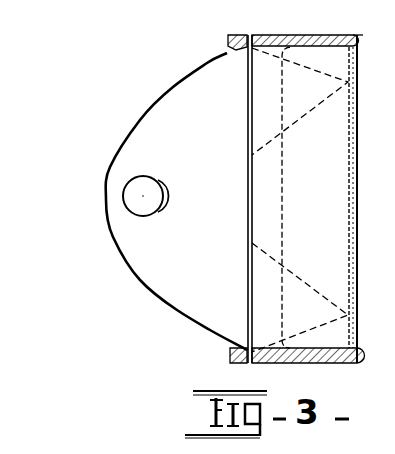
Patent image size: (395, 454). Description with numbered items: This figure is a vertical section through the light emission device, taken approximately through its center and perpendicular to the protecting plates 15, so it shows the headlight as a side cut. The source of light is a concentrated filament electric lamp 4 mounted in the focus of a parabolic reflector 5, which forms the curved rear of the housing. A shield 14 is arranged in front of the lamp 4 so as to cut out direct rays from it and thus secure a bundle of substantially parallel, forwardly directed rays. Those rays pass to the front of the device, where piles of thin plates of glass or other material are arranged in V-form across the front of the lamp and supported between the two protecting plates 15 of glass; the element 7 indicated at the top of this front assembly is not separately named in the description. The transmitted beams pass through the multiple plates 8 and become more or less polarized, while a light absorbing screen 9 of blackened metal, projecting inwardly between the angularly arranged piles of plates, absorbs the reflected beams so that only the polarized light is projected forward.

The concentrated filament electric lamp 4 is at (134, 196).
The parabolic reflector 5 is at (138, 278).
The partition plate 7 is at (262, 70).
The multiple plates 8 is at (391, 281).
The light absorbing screen 9 is at (320, 187).
The shield 14 is at (168, 193).
The protecting plate 15 is at (247, 115).